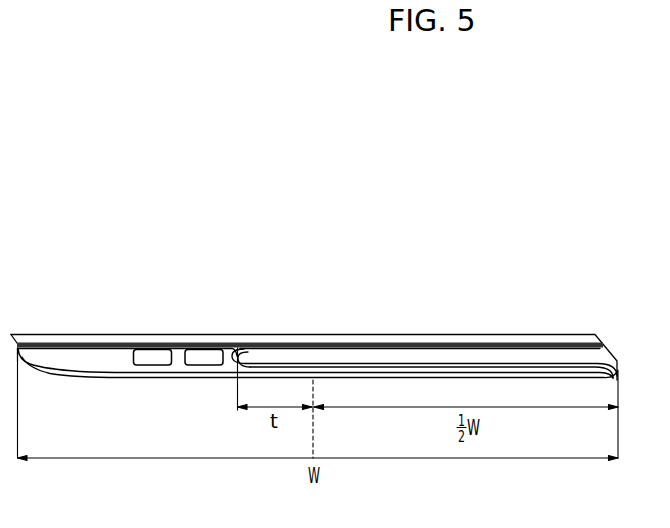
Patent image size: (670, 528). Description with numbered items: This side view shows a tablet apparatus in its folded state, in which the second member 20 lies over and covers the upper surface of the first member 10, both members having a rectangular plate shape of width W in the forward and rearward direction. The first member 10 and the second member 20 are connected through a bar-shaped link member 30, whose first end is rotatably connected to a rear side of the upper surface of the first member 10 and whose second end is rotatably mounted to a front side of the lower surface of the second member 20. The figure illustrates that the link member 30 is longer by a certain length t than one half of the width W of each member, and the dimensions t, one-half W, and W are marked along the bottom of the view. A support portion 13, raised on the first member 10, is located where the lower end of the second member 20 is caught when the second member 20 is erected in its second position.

The first member 10 is at (147, 381).
The support portion 13 is at (238, 348).
The second member 20 is at (314, 301).
The link member 30 is at (499, 357).